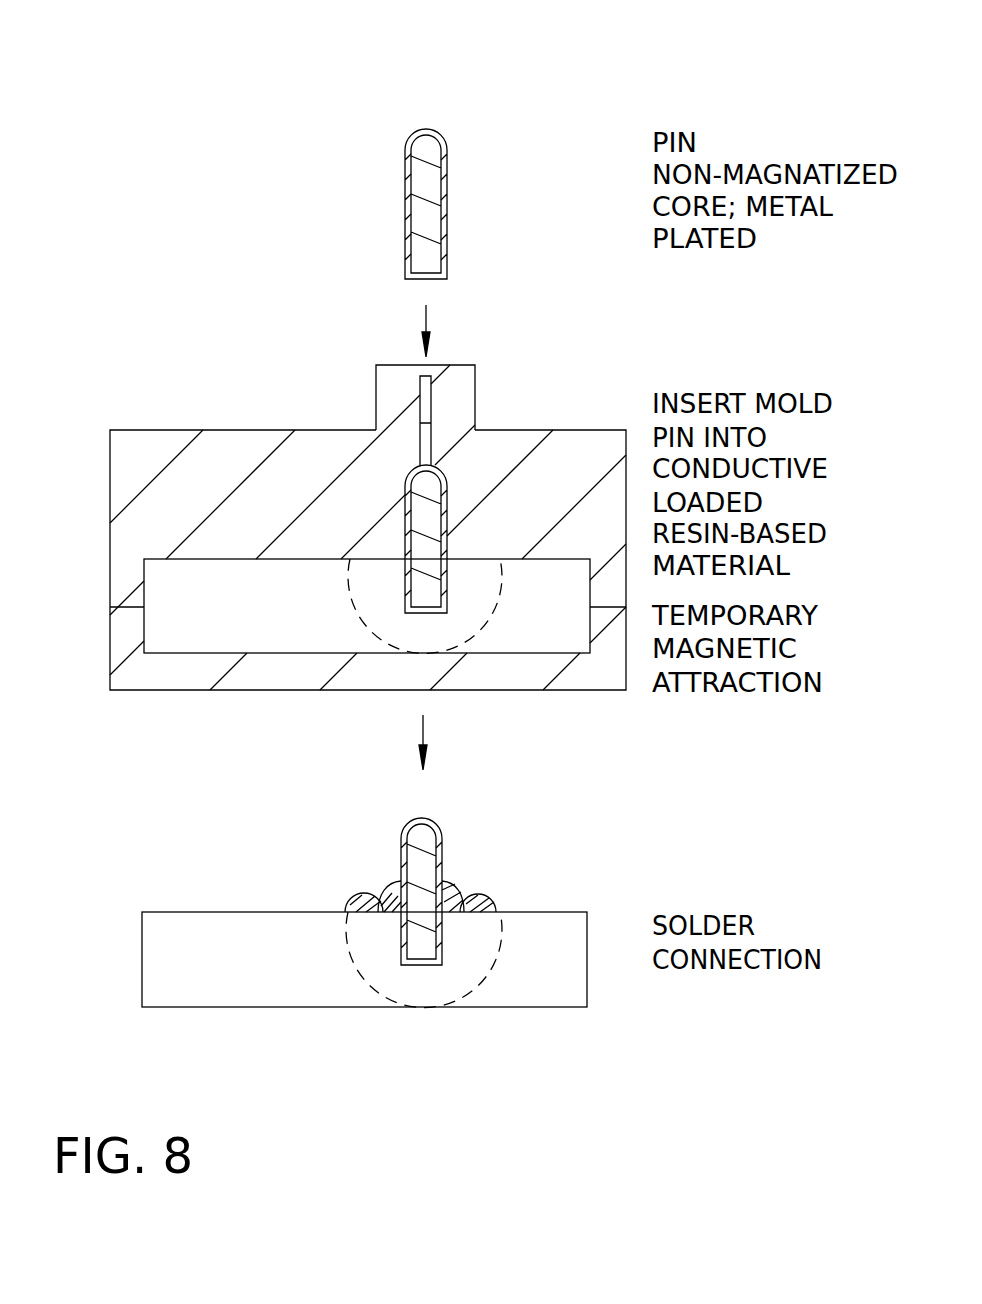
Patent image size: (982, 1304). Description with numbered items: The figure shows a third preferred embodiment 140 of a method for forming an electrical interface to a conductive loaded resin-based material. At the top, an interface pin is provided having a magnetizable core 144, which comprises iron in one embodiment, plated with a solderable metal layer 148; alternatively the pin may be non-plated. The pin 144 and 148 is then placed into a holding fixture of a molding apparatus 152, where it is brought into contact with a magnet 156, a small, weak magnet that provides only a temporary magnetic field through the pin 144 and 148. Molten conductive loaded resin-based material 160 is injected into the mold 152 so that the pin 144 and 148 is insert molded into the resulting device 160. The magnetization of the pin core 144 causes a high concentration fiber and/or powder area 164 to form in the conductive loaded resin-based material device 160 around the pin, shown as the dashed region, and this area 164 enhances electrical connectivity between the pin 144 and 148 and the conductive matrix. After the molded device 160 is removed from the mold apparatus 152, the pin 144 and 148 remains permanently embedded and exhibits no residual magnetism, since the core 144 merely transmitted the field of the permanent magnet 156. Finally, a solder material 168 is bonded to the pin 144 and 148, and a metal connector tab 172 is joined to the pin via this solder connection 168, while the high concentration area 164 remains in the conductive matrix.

The third preferred embodiment 140 is at (220, 65).
The magnetizable pin core 144 is at (428, 204).
The solderable metal layer 148 is at (405, 173).
The molding apparatus 152 is at (160, 430).
The magnet 156 is at (427, 397).
The conductive loaded resin-based material device 160 is at (558, 635).
The high concentration fiber and/or powder area 164 is at (378, 610).
The solder material 168 is at (448, 892).
The metal connector tab 172 is at (362, 905).